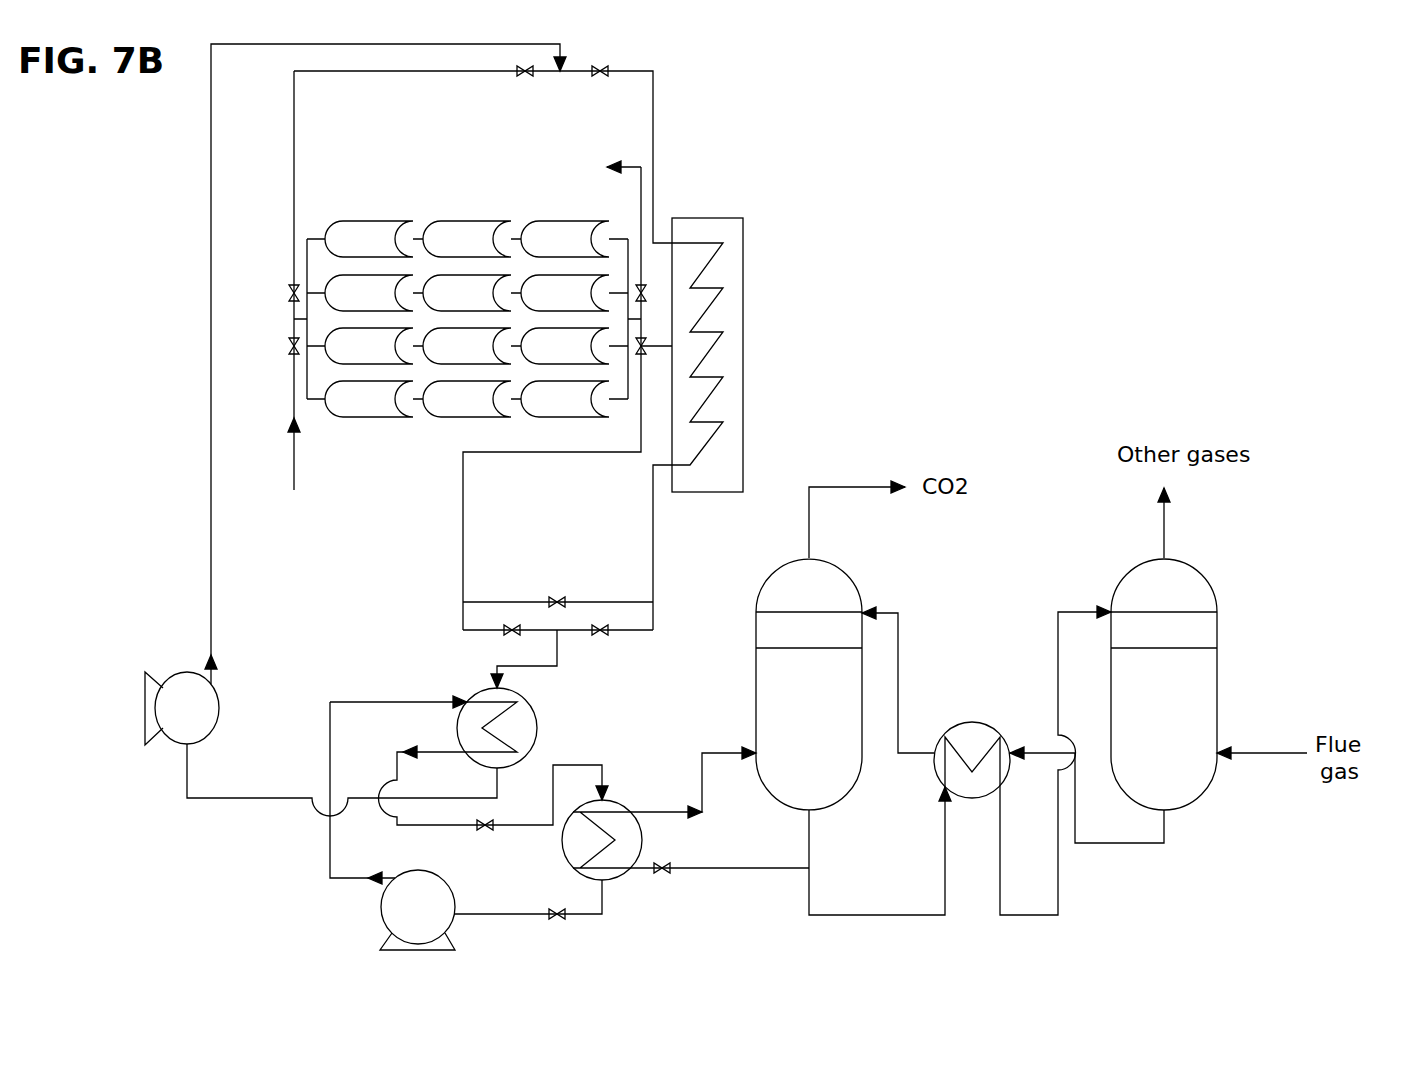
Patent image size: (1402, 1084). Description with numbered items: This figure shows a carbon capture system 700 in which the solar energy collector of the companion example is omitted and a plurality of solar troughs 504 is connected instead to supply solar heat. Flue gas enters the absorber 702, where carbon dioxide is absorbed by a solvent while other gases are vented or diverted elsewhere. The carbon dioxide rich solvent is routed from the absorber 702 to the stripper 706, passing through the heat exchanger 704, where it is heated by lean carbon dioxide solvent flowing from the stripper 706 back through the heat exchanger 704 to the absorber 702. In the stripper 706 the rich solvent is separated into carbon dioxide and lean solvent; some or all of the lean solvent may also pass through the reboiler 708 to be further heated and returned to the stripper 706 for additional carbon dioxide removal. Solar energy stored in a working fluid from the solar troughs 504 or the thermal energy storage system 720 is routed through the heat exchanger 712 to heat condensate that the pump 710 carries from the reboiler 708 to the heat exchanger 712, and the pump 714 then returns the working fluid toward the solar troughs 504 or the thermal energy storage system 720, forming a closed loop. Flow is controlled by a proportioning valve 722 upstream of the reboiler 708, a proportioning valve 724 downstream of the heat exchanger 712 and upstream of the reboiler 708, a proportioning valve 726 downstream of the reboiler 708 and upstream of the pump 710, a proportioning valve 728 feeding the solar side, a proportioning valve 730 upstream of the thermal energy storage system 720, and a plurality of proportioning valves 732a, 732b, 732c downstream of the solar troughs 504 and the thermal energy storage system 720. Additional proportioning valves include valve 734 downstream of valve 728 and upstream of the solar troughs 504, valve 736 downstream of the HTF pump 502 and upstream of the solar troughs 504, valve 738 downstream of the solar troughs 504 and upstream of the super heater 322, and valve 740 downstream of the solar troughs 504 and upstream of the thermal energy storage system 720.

The carbon capture system 700 is at (1290, 103).
The absorber 702 is at (1205, 573).
The heat exchanger 704 is at (968, 722).
The stripper 706 is at (850, 576).
The reboiler 708 is at (622, 877).
The pump 710 is at (383, 918).
The heat exchanger 712 is at (537, 713).
The pump 714 is at (180, 673).
The thermal energy storage system 720 is at (745, 415).
The proportioning valve 722 is at (668, 868).
The proportioning valve 724 is at (487, 831).
The proportioning valve 726 is at (556, 921).
The proportioning valve 728 is at (520, 75).
The proportioning valve 730 is at (601, 75).
The proportioning valve 732a is at (556, 598).
The proportioning valve 732b is at (506, 631).
The proportioning valve 732c is at (604, 633).
The proportioning valve 734 is at (289, 291).
The proportioning valve 736 is at (289, 346).
The proportioning valve 738 is at (644, 284).
The proportioning valve 740 is at (648, 341).
The solar troughs 504 is at (610, 210).
The super heater 322 is at (565, 167).
The HTF pump 502 is at (310, 504).